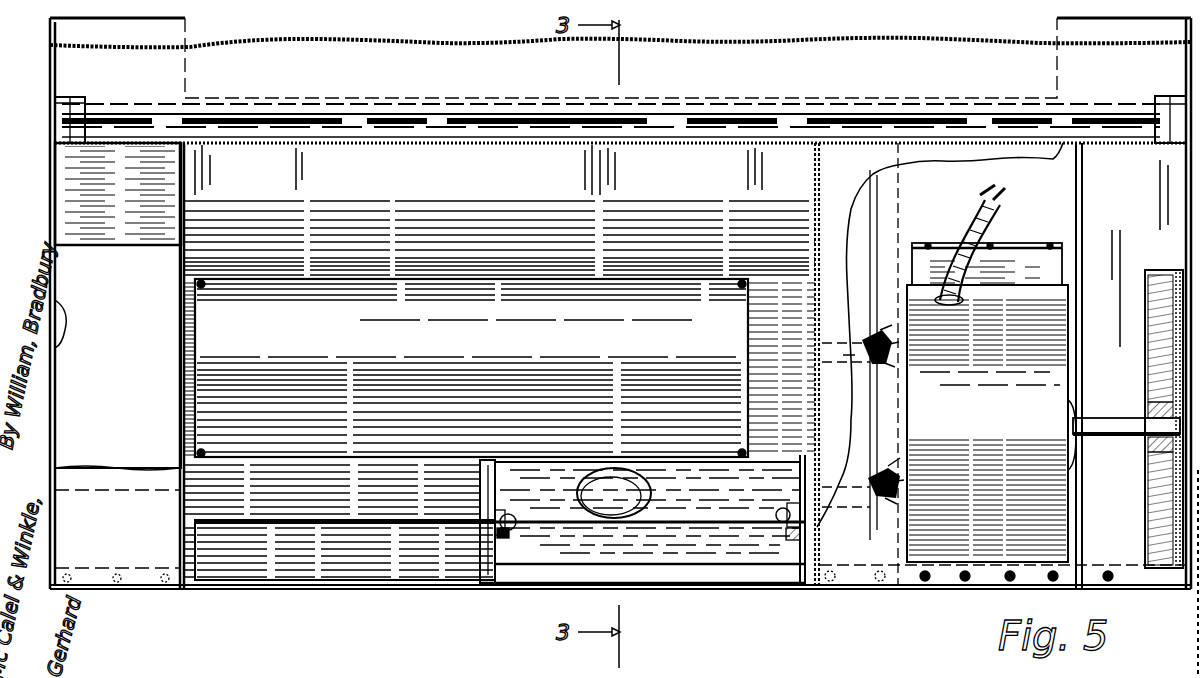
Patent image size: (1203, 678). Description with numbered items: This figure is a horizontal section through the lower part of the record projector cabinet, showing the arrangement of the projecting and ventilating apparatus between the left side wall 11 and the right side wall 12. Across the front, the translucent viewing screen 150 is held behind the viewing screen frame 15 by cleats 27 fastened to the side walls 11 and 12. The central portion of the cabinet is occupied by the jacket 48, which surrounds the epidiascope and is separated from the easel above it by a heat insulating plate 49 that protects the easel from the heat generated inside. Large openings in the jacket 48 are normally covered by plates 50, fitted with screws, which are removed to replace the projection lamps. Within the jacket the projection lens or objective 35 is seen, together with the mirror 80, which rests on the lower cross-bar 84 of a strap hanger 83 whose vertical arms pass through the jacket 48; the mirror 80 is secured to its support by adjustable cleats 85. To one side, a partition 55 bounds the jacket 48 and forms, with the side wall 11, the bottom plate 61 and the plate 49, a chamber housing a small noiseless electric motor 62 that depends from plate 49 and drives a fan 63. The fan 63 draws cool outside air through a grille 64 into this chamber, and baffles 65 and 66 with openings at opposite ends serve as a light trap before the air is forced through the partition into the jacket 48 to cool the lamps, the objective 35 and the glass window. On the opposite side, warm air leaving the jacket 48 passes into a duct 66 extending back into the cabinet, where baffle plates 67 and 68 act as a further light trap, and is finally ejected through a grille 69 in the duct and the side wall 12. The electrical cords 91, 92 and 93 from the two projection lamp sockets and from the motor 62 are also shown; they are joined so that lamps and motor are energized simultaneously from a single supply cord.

The left side wall 11 is at (1185, 244).
The right side wall 12 is at (50, 77).
The viewing screen frame 15 is at (1124, 40).
The cleats 27 is at (90, 102).
The projection lens or objective 35 is at (649, 498).
The jacket 48 is at (655, 245).
The heat insulating plate 49 is at (446, 172).
The plates 50 is at (471, 368).
The partition 55 is at (939, 366).
The bottom plate 61 is at (928, 589).
The electric motor 62 is at (991, 402).
The fan 63 is at (1150, 382).
The grille 64 is at (1185, 463).
The baffle 65 is at (895, 222).
The baffle / duct 66 is at (178, 362).
The baffle plate 67 is at (118, 194).
The baffle plate 68 is at (118, 356).
The grille 69 is at (57, 308).
The mirror 80 is at (735, 540).
The strap hanger 83 is at (487, 545).
The lower cross-bar 84 is at (558, 575).
The adjustable cleats 85 is at (508, 514).
The electrical cord 91 is at (862, 338).
The electrical cord 92 is at (905, 470).
The electrical cord 93 is at (994, 225).
The translucent viewing screen 150 is at (854, 40).